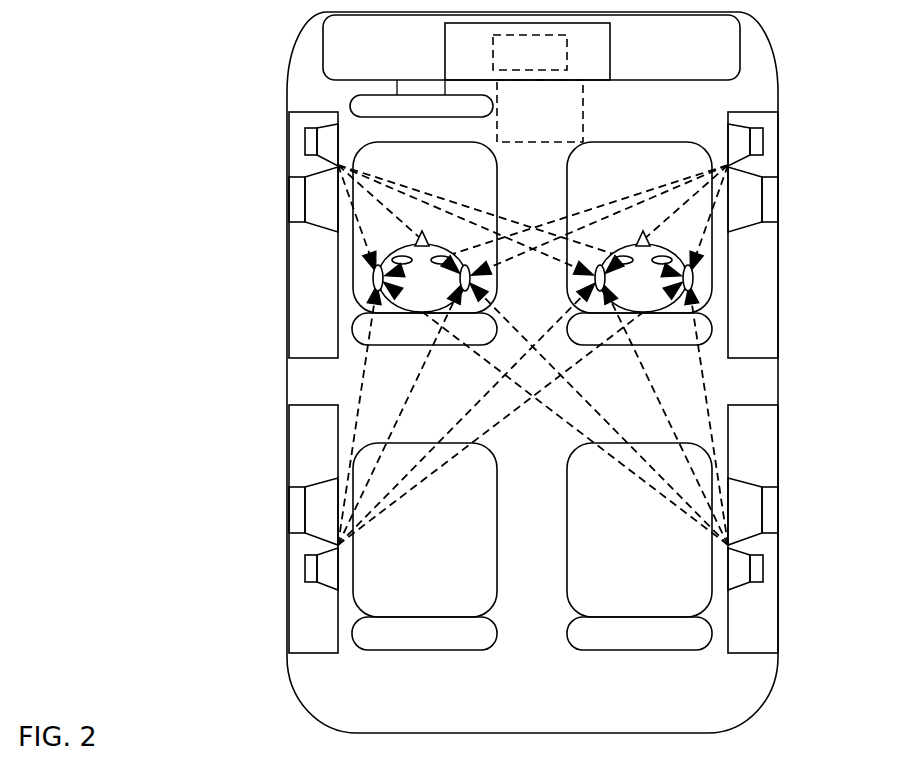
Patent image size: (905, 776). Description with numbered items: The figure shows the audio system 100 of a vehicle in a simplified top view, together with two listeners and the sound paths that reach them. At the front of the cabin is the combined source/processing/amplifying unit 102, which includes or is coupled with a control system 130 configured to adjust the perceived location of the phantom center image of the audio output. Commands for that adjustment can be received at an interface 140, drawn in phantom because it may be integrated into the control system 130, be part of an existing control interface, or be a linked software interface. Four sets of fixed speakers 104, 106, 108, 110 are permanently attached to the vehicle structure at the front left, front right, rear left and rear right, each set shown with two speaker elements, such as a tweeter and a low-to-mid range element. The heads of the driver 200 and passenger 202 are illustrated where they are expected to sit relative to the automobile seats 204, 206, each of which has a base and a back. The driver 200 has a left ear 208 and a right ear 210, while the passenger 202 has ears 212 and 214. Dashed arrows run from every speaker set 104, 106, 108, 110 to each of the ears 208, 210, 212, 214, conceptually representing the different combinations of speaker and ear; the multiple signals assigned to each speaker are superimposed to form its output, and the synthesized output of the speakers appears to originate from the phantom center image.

The audio system 100 is at (134, 94).
The source/processing/amplifying unit 102 is at (600, 54).
The control system 130 is at (560, 65).
The interface 140 is at (557, 159).
The set of speakers 104 is at (260, 110).
The set of speakers 106 is at (805, 112).
The set of speakers 108 is at (260, 525).
The set of speakers 110 is at (805, 525).
The driver's head 200 is at (406, 300).
The passenger's head 202 is at (627, 300).
The automobile seat 204 is at (441, 179).
The automobile seat 206 is at (581, 179).
The left ear 208 is at (373, 282).
The right ear 210 is at (472, 290).
The ear 212 is at (601, 297).
The ear 214 is at (693, 289).